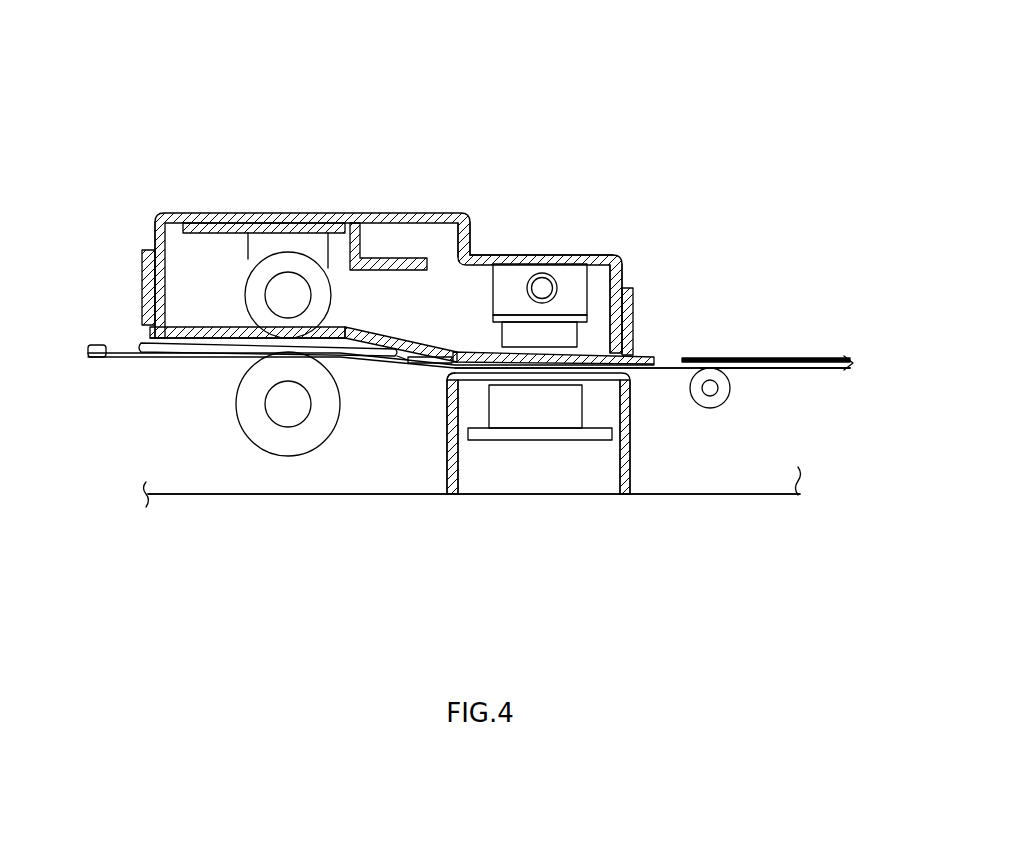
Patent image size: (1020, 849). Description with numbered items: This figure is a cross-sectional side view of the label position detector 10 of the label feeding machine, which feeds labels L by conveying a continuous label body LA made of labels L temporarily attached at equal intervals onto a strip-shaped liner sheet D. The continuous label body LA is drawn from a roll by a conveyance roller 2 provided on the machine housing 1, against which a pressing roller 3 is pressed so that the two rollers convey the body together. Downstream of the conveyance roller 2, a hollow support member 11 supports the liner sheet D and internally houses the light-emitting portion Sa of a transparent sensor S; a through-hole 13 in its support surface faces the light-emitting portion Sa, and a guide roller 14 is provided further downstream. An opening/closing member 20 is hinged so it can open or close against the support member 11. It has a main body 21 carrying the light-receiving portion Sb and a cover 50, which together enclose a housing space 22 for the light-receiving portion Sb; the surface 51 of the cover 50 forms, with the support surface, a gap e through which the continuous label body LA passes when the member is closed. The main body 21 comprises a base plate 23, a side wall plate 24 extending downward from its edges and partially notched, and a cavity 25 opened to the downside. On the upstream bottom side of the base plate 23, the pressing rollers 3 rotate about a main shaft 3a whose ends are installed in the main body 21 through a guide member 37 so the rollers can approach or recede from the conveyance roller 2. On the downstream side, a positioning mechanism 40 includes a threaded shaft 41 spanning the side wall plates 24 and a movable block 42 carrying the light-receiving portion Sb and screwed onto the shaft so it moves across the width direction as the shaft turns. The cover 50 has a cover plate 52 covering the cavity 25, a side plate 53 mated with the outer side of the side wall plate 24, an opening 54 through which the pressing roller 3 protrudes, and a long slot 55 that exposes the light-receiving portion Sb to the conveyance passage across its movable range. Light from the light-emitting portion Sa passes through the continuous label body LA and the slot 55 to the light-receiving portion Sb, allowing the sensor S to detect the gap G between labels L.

The label position detector 10 is at (603, 112).
The machine housing 1 is at (197, 496).
The conveyance roller 2 is at (284, 448).
The pressing roller 3 is at (285, 258).
The main shaft 3a is at (290, 292).
The support member 11 is at (633, 446).
The through-hole 13 is at (483, 380).
The guide roller 14 is at (712, 402).
The opening/closing member 20 is at (197, 213).
The main body 21 is at (472, 246).
The housing space 22 is at (440, 290).
The base plate 23 is at (573, 251).
The side wall plate 24 is at (148, 250).
The cavity 25 is at (147, 330).
The guide member 37 is at (362, 252).
The positioning mechanism 40 is at (577, 295).
The threaded shaft 41 is at (542, 290).
The movable block 42 is at (616, 284).
The cover 50 is at (375, 340).
The surface 51 is at (550, 366).
The cover plate 52 is at (146, 344).
The side plate 53 is at (148, 270).
The opening 54 is at (250, 333).
The slot 55 is at (527, 363).
The transparent sensor S is at (736, 360).
The light-emitting portion Sa is at (570, 395).
The light-receiving portion Sb is at (548, 333).
The label L is at (810, 360).
The continuous label body LA is at (97, 358).
The gap G is at (405, 362).
The gap e is at (447, 376).
The strip-shaped liner sheet D is at (782, 371).